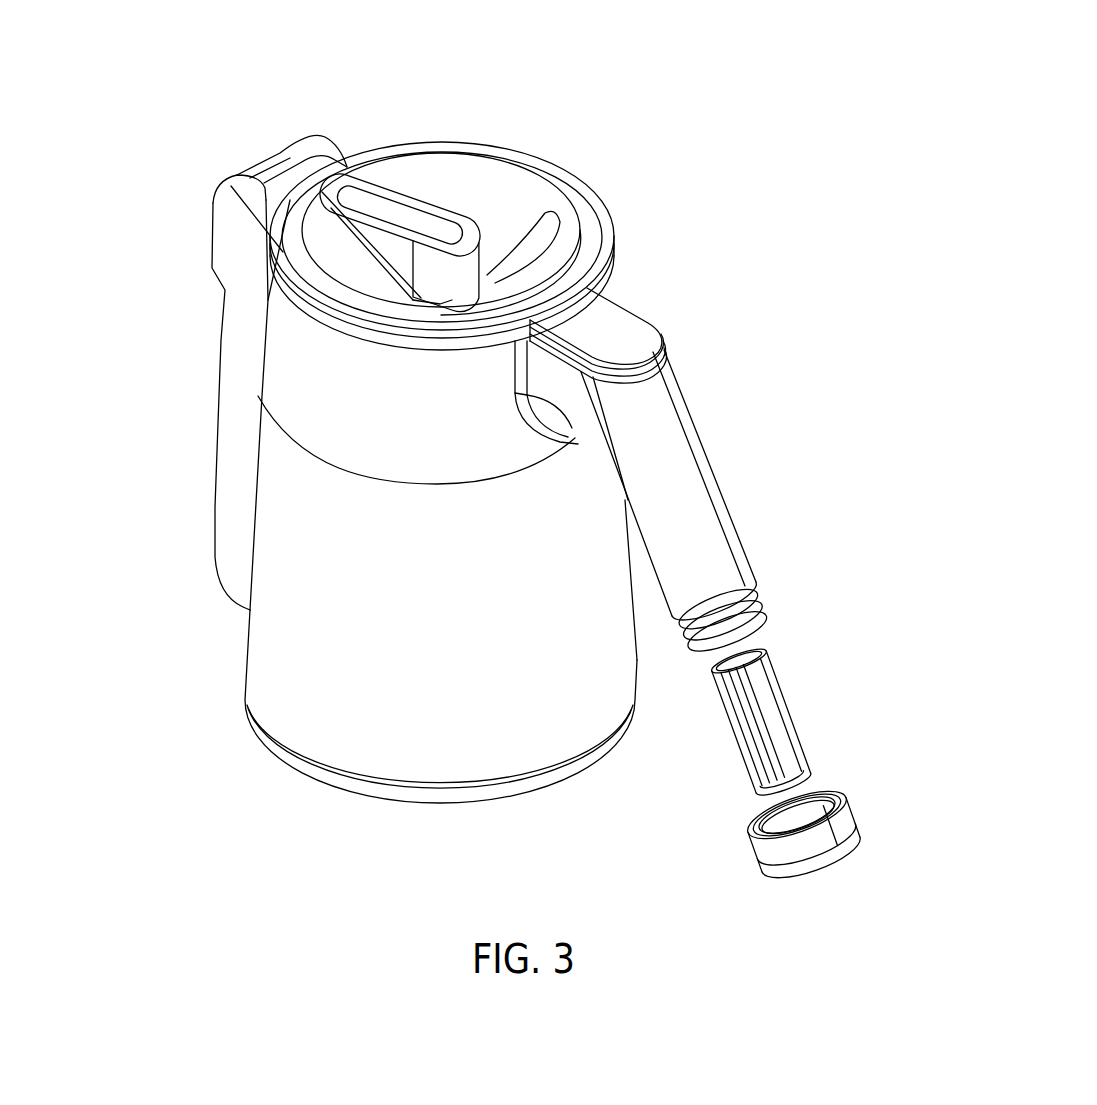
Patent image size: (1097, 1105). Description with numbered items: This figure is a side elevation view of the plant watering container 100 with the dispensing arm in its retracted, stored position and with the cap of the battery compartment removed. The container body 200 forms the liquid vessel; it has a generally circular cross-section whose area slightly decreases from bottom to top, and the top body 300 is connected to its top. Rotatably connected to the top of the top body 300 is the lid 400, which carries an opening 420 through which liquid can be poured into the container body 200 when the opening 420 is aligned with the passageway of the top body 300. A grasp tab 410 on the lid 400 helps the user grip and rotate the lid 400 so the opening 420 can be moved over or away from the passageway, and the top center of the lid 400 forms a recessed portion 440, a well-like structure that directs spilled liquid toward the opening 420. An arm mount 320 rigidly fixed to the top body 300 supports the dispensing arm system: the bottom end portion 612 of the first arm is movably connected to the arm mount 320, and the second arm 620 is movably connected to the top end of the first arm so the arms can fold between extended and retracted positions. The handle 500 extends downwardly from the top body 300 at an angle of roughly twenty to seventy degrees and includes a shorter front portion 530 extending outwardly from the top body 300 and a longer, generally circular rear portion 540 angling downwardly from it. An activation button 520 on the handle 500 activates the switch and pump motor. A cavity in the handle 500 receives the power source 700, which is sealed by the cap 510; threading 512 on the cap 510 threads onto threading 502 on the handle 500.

The plant watering container 100 is at (668, 193).
The container body 200 is at (320, 683).
The top body 300 is at (315, 403).
The arm mount 320 is at (256, 210).
The lid 400 is at (474, 180).
The grasp tab 410 is at (392, 210).
The opening 420 is at (535, 258).
The recessed portion 440 is at (494, 220).
The handle 500 is at (688, 490).
The threading 502 is at (757, 610).
The cap 510 is at (807, 864).
The threading 512 is at (765, 823).
The activation button 520 is at (620, 338).
The front portion 530 is at (573, 393).
The rear portion 540 is at (697, 443).
The bottom end portion 612 is at (313, 138).
The second arm 620 is at (238, 340).
The power source 700 is at (806, 722).